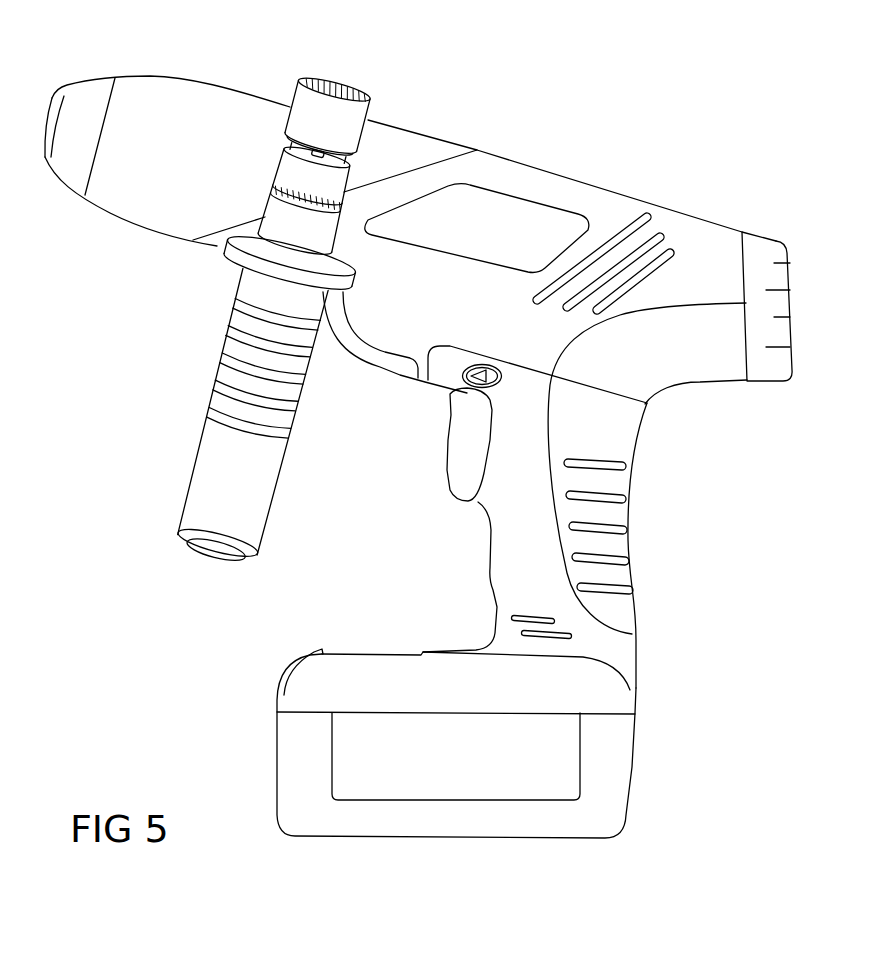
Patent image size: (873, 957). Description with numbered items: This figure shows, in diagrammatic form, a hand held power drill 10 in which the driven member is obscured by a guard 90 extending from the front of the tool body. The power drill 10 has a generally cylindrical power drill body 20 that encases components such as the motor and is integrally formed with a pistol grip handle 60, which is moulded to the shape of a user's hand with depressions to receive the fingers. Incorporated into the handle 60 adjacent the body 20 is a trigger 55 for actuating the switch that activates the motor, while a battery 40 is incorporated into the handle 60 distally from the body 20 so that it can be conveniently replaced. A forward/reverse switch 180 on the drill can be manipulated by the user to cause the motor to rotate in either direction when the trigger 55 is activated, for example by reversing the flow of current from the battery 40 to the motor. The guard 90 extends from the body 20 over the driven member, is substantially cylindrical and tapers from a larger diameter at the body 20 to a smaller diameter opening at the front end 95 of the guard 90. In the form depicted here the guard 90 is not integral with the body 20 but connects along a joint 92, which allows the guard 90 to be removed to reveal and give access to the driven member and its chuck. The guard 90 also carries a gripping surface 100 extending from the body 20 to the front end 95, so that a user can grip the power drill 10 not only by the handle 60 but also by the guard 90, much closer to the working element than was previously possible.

The power drill 10 is at (695, 153).
The power drill body 20 is at (581, 178).
The battery 40 is at (613, 764).
The trigger 55 is at (447, 470).
The pistol grip handle 60 is at (629, 548).
The guard 90 is at (142, 224).
The joint 92 is at (425, 165).
The front end of the guard 95 is at (50, 100).
The gripping surface 100 is at (200, 122).
The forward/reverse switch 180 is at (457, 418).